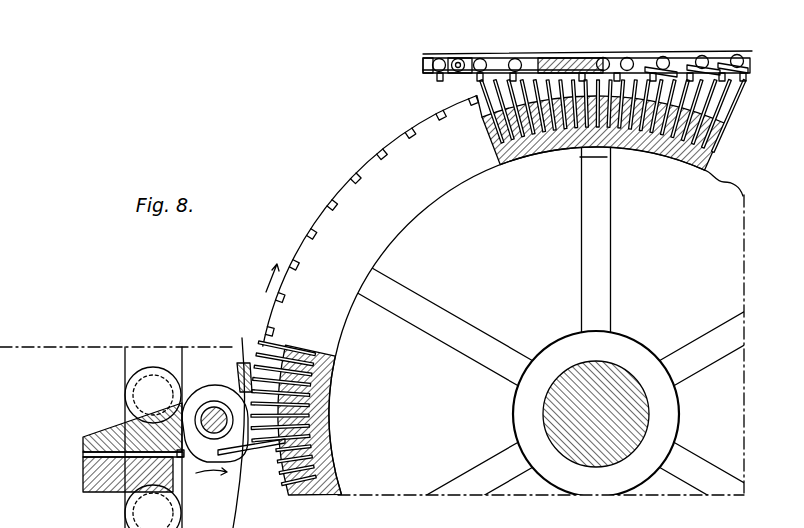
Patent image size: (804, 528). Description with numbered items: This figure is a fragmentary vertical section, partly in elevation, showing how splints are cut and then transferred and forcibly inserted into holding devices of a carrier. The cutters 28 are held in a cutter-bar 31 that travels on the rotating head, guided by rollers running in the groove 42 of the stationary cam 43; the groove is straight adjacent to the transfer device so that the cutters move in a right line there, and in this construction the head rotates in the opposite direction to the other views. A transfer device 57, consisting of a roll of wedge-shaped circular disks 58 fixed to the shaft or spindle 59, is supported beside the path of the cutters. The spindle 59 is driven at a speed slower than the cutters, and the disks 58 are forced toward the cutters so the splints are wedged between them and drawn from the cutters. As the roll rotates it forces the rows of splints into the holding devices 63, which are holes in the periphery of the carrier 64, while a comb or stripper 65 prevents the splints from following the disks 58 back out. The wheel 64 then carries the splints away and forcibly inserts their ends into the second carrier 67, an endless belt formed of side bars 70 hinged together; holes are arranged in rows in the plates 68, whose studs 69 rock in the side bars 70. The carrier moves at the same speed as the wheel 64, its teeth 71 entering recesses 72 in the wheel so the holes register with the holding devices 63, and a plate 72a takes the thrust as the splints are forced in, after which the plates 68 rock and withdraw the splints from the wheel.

The cutters 28 is at (93, 456).
The cutter-bar 31 is at (119, 427).
The groove 42 is at (163, 353).
The cam 43 is at (92, 355).
The transfer device 57 is at (215, 417).
The wedge-shaped circular disks 58 is at (226, 457).
The shaft or spindle 59 is at (204, 441).
The holding devices 63 is at (297, 495).
The carrier 64 is at (566, 337).
The comb or stripper 65 is at (246, 362).
The second carrier 67 is at (562, 67).
The plates 68 is at (653, 64).
The studs 69 is at (712, 62).
The side bars 70 is at (509, 58).
The teeth 71 is at (434, 86).
The recesses 72 is at (363, 177).
The plate 72a is at (587, 52).